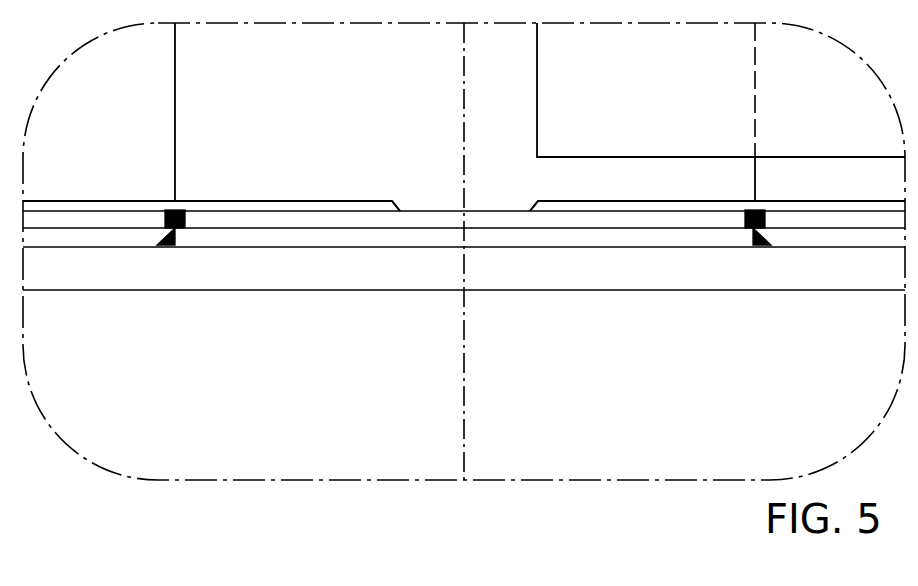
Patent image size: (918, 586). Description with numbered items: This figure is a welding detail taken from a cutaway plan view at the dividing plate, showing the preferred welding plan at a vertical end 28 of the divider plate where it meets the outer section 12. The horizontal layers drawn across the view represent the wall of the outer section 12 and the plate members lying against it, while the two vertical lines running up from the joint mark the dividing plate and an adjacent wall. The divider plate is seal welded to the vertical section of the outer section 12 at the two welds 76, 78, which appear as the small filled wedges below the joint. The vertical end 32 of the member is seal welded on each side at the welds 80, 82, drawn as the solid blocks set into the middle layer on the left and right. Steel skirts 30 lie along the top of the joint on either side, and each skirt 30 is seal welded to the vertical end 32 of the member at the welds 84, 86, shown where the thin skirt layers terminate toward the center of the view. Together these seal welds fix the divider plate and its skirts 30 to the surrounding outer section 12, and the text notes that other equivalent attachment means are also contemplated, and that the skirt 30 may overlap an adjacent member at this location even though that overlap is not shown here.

The outer section 12 is at (297, 272).
The vertical end of the divider plate 28 is at (497, 238).
The steel skirt 30 is at (248, 201).
The vertical end of the member 32 is at (583, 223).
The seal weld 76 is at (762, 247).
The seal weld 78 is at (168, 246).
The seal weld 80 is at (745, 223).
The seal weld 82 is at (166, 210).
The seal weld 84 is at (401, 199).
The seal weld 86 is at (527, 200).